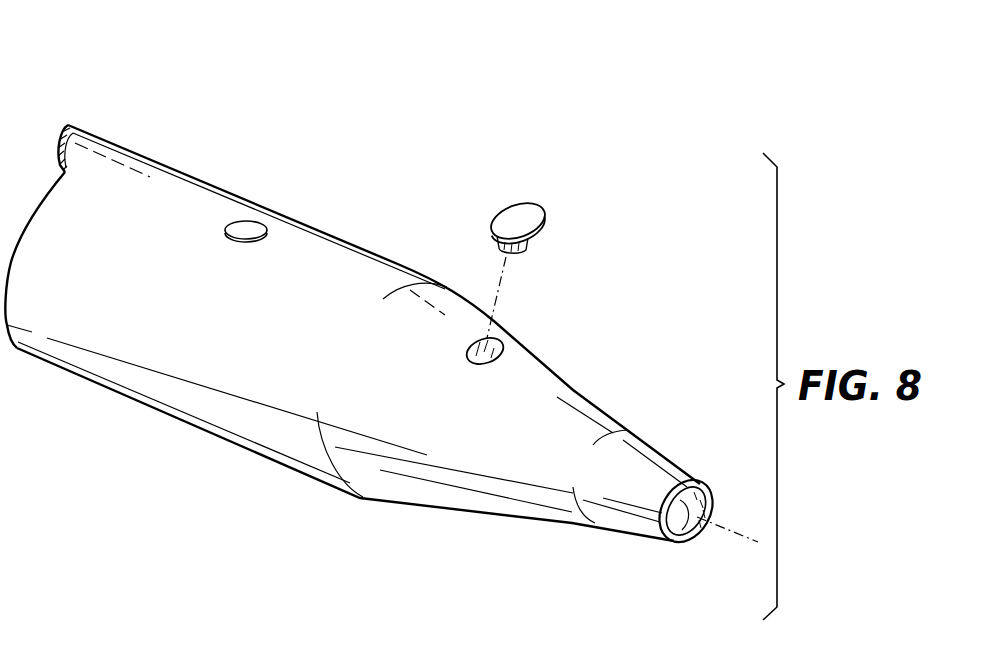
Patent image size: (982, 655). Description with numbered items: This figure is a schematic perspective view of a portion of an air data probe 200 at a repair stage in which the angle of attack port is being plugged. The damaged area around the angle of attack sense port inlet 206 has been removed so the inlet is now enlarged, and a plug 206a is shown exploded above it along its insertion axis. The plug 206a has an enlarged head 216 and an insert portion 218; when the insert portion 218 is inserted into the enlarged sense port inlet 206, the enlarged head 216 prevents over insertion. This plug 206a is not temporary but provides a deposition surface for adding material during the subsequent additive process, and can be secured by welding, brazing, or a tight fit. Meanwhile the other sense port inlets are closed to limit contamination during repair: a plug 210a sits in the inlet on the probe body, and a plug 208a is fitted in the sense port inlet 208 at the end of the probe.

The air data probe 200 is at (186, 95).
The sense port inlet 206 is at (500, 342).
The plug 206a is at (508, 225).
The enlarged head 216 is at (525, 228).
The insert portion 218 is at (499, 247).
The plug 210a is at (258, 229).
The sense port inlet 208 is at (703, 506).
The plug 208a is at (693, 530).